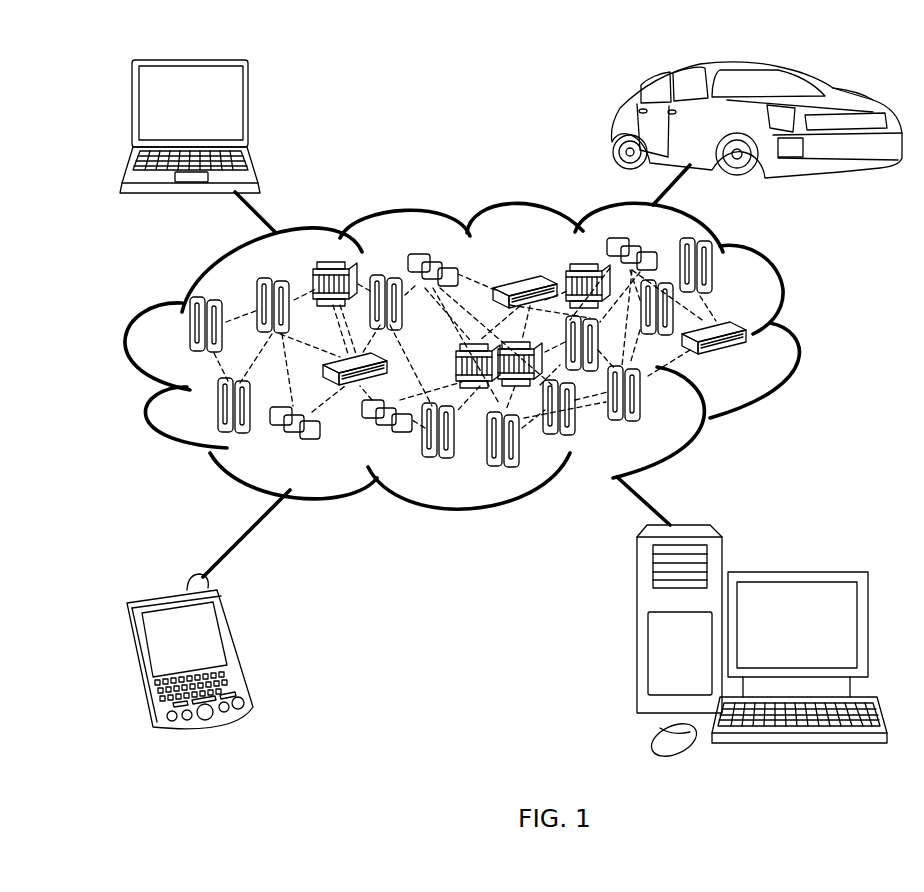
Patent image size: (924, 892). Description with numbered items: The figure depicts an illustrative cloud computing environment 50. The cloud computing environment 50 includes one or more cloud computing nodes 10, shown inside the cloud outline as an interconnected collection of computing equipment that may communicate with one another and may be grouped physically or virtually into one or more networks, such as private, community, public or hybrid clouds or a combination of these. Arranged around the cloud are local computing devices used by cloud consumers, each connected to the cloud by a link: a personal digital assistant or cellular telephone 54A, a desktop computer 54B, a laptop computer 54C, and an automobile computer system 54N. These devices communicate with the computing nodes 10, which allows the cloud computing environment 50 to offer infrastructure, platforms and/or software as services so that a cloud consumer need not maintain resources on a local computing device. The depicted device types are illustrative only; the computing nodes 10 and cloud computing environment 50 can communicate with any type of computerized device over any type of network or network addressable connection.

The cloud computing nodes 10 is at (754, 363).
The cloud computing environment 50 is at (797, 336).
The personal digital assistant or cellular telephone 54A is at (238, 646).
The desktop computer 54B is at (795, 572).
The laptop computer 54C is at (250, 112).
The automobile computer system 54N is at (612, 123).